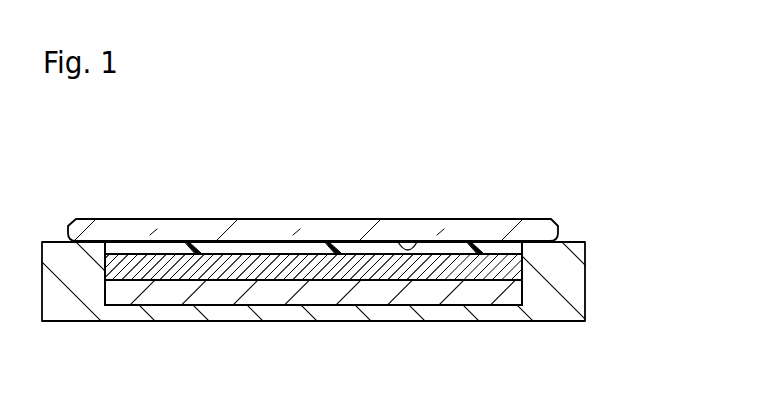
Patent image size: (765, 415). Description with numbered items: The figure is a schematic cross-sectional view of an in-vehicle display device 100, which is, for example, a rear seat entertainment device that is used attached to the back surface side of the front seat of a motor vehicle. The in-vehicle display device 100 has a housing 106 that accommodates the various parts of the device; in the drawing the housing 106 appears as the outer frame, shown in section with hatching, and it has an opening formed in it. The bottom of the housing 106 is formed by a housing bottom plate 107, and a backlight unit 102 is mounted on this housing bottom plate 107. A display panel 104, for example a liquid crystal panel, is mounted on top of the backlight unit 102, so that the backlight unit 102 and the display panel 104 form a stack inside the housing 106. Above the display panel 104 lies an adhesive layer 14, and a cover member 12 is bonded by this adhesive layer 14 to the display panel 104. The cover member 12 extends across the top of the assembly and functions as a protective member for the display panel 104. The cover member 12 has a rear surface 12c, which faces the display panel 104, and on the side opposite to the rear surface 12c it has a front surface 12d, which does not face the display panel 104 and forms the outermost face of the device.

The in-vehicle display device 100 is at (523, 131).
The cover member 12 is at (487, 232).
The rear surface 12c is at (419, 241).
The front surface 12d is at (345, 218).
The adhesive layer 14 is at (286, 250).
The backlight unit 102 is at (158, 292).
The display panel 104 is at (222, 265).
The housing 106 is at (547, 292).
The housing bottom plate 107 is at (290, 321).